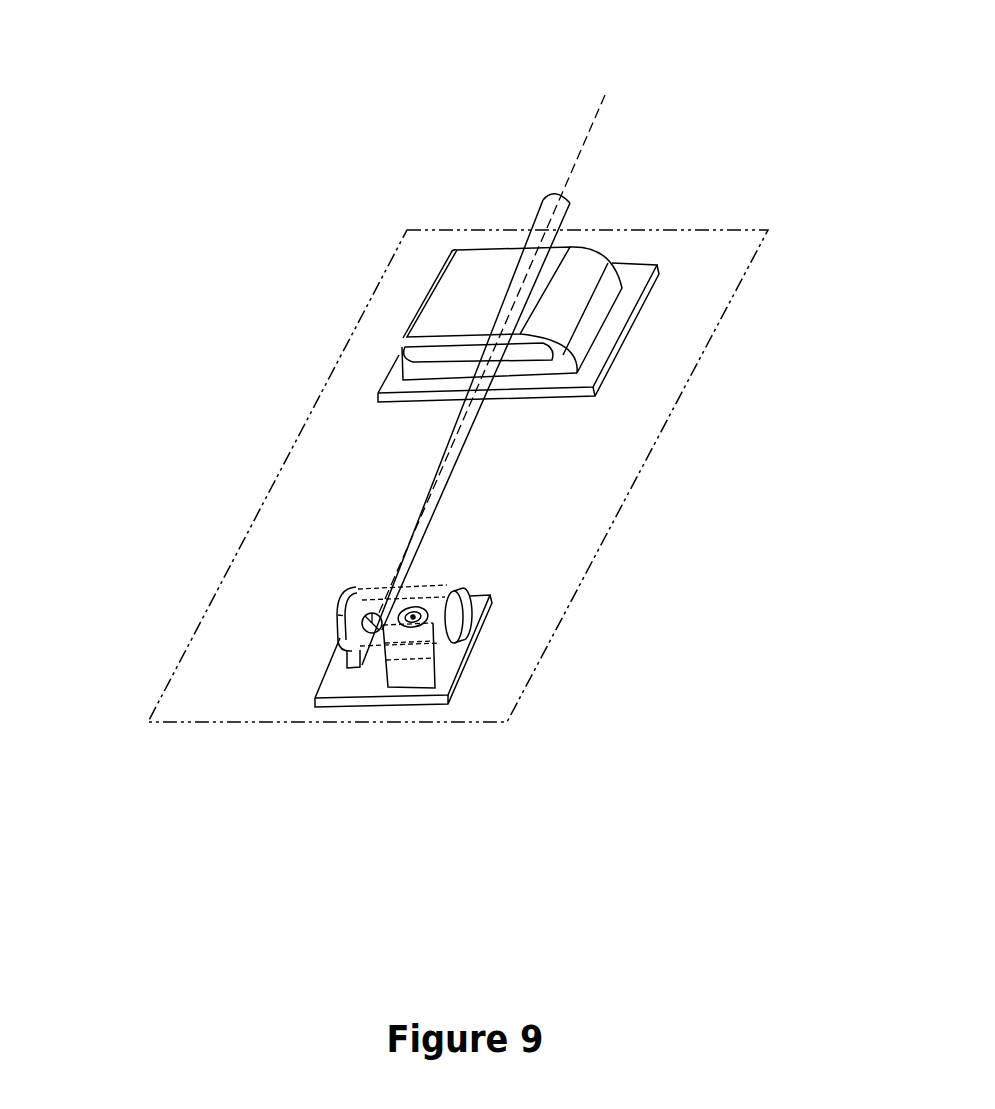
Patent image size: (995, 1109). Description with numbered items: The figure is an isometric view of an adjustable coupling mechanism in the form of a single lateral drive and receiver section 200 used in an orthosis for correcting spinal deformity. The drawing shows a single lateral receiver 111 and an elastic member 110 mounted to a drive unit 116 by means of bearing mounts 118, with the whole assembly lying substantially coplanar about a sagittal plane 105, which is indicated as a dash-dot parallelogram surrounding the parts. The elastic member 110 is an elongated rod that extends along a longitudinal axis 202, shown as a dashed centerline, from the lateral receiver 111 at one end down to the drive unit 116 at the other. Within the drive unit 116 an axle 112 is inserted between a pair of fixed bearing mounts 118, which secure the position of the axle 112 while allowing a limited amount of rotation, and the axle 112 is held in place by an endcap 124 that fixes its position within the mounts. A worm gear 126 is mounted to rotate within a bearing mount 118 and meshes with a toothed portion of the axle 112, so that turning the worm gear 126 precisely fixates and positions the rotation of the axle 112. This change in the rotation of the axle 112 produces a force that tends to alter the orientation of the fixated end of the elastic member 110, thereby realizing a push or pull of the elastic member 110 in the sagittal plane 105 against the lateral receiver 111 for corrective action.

The lateral drive and receiver section 200 is at (362, 122).
The longitudinal axis 202 is at (580, 155).
The sagittal plane 105 is at (712, 230).
The lateral receiver 111 is at (468, 305).
The elastic member 110 is at (472, 423).
The drive unit 116 is at (284, 624).
The bearing mount 118 is at (398, 655).
The axle 112 is at (378, 610).
The worm gear 126 is at (415, 620).
The endcap 124 is at (462, 612).